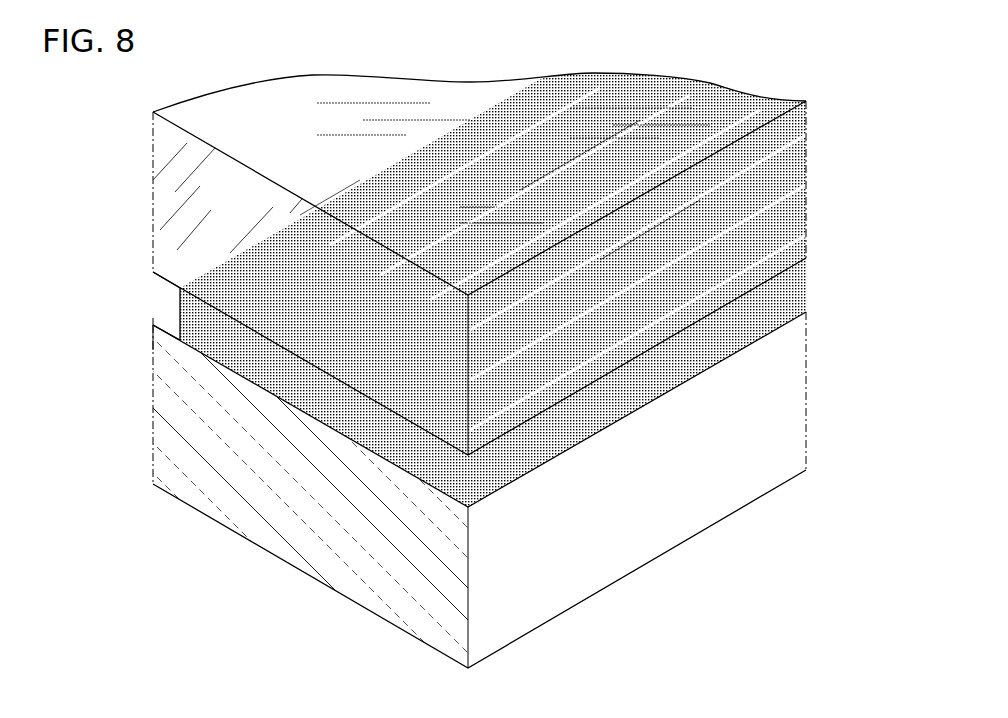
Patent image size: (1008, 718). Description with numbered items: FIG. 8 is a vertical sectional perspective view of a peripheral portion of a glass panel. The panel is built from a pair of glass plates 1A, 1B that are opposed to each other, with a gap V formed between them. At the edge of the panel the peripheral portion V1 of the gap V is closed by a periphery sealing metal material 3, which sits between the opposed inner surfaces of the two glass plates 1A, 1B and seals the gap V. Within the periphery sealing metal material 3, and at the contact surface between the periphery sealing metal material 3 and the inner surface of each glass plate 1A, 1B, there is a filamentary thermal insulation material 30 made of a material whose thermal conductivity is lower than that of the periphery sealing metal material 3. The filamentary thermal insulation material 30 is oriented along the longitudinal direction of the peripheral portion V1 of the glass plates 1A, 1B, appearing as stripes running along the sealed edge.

The glass plate 1A is at (798, 129).
The glass plate 1B is at (775, 426).
The periphery sealing metal material 3 is at (605, 435).
The filamentary thermal insulation material 30 is at (750, 250).
The gap V is at (165, 305).
The peripheral portion V1 is at (132, 343).